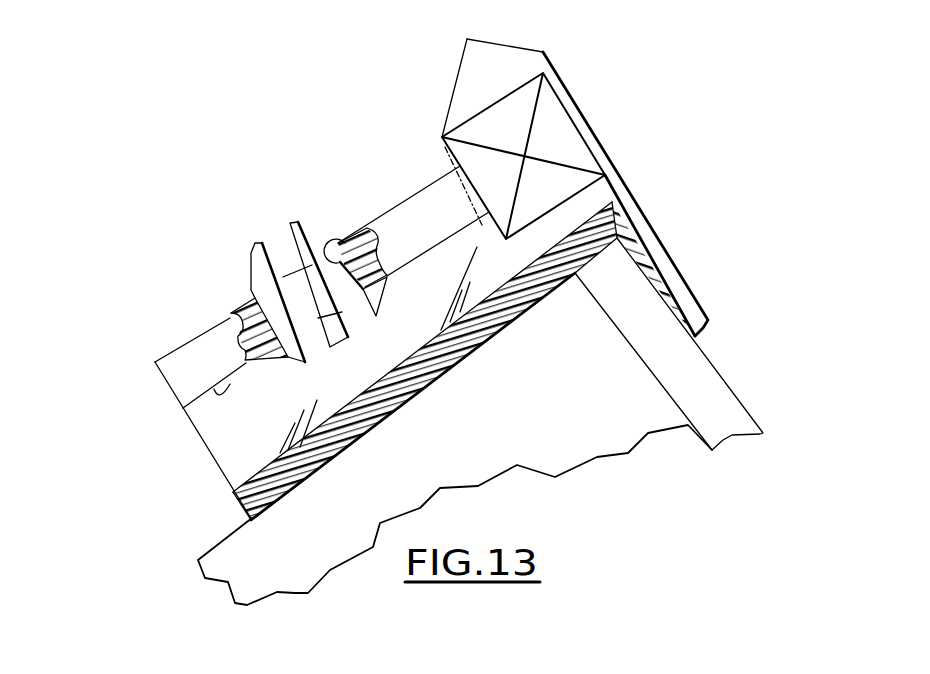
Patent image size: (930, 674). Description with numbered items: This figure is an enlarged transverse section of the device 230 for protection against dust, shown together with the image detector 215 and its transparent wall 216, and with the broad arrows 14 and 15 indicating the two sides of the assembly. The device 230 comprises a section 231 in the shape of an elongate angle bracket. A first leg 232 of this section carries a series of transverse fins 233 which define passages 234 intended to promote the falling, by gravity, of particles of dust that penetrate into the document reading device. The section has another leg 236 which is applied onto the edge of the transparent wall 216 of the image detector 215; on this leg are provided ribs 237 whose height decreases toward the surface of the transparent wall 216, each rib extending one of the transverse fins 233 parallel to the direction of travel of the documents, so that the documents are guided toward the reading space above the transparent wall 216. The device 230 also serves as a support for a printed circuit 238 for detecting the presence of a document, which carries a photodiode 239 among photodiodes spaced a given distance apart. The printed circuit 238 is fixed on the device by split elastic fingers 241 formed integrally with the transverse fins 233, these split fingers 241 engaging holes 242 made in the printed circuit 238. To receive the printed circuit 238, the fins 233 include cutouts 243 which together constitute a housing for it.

The first mounting assembly 14 is at (289, 269).
The second mounting assembly 15 is at (593, 225).
The image detector 215 is at (594, 487).
The transparent wall 216 is at (697, 393).
The device for protection against dust 230 is at (593, 97).
The section 231 is at (440, 373).
The first leg 232 is at (333, 445).
The transverse fins 233 is at (218, 417).
The passages 234 is at (237, 452).
The another leg 236 is at (667, 302).
The ribs 237 is at (668, 253).
The printed circuit 238 is at (183, 370).
The photodiode 239 is at (503, 125).
The split elastic fingers 241 is at (258, 247).
The holes 242 is at (325, 236).
The cutouts 243 is at (226, 384).